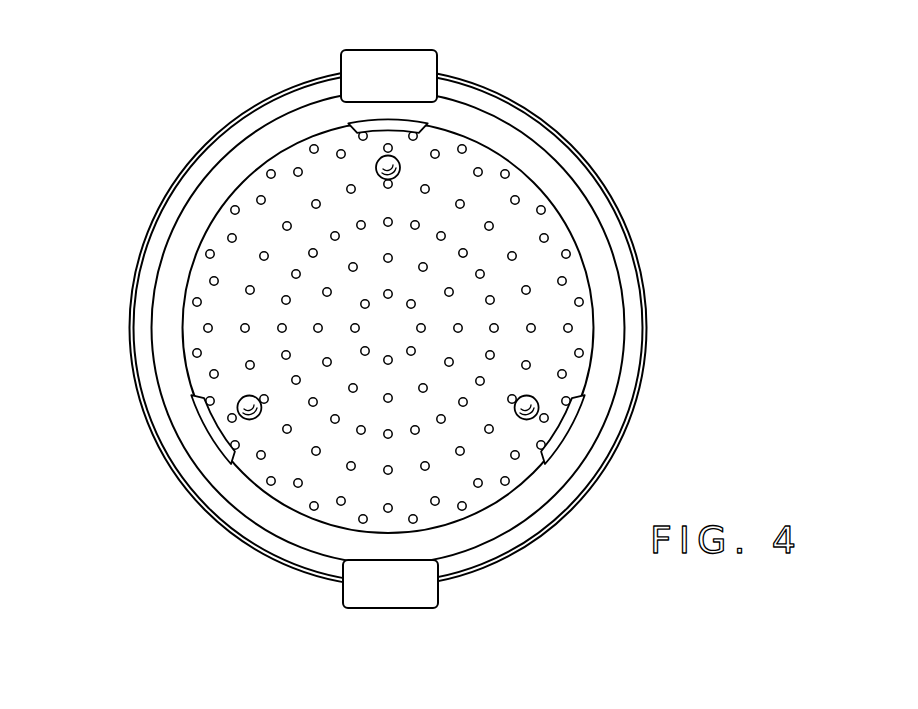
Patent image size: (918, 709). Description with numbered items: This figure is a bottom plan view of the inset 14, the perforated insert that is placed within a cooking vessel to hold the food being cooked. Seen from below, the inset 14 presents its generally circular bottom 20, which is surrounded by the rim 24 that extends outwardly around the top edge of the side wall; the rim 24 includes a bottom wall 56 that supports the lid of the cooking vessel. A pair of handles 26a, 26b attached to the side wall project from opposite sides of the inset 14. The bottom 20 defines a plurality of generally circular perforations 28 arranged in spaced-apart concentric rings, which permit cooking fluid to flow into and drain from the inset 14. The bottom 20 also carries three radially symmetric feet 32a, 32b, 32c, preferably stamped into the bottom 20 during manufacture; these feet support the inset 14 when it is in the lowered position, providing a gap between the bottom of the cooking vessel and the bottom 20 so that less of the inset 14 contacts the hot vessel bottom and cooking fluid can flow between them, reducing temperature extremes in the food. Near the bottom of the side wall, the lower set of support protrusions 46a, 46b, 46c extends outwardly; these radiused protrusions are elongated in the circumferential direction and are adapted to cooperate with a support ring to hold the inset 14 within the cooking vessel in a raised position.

The inset 14 is at (730, 178).
The bottom 20 is at (582, 317).
The rim 24 is at (563, 137).
The handle 26a is at (438, 72).
The handle 26b is at (439, 594).
The perforations 28 is at (484, 271).
The foot 32a is at (536, 399).
The foot 32b is at (397, 160).
The foot 32c is at (250, 420).
The support protrusion 46a is at (566, 443).
The support protrusion 46b is at (358, 121).
The support protrusion 46c is at (202, 421).
The bottom wall 56 is at (621, 249).